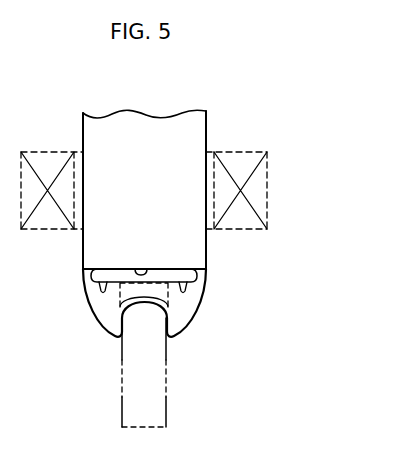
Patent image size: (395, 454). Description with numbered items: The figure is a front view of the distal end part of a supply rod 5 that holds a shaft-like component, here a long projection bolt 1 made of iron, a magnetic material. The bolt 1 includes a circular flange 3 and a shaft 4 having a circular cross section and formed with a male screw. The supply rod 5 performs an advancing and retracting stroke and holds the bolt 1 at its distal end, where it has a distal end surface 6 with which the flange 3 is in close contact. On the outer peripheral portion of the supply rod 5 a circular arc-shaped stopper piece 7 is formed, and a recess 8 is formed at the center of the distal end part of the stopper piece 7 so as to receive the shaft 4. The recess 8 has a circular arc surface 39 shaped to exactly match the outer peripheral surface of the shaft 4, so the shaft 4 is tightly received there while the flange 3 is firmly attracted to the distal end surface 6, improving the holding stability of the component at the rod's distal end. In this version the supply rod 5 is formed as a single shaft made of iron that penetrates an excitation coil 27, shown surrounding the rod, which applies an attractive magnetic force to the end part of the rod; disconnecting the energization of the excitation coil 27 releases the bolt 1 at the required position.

The supply rod 5 is at (78, 127).
The excitation coil 27 is at (268, 172).
The circular flange 3 is at (198, 274).
The distal end surface 6 is at (142, 270).
The stopper piece 7 is at (203, 303).
The circular arc surface 39 is at (144, 309).
The recess 8 is at (124, 325).
The shaft 4 is at (119, 410).
The projection bolt 1 is at (176, 400).